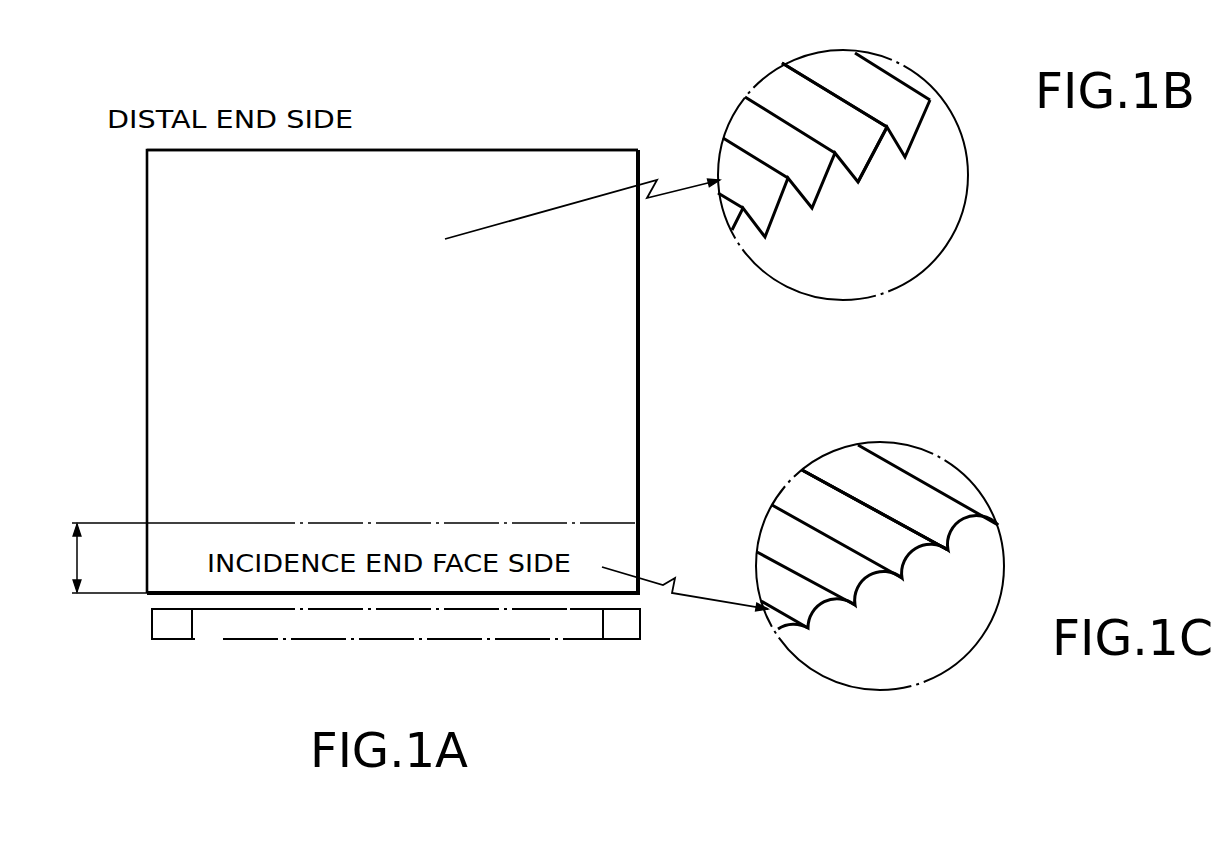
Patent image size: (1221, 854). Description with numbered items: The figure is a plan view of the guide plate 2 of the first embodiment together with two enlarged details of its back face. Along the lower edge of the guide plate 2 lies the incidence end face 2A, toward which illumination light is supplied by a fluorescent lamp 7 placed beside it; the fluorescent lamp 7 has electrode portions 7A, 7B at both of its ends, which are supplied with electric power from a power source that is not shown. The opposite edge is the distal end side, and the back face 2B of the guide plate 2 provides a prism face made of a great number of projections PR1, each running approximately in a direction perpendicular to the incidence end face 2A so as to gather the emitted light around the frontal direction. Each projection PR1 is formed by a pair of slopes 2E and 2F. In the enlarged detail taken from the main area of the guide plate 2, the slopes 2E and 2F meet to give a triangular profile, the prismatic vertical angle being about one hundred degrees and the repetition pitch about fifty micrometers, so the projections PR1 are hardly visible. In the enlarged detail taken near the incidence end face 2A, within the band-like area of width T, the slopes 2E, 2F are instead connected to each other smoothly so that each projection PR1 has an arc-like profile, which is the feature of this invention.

In FIG. 1A, the guide plate 2 is at (501, 158).
In FIG. 1A, the incidence end face 2A is at (161, 594).
In FIG. 1A, the back face 2B is at (411, 158).
In FIG. 1B, the slope 2E is at (773, 80).
In FIG. 1C, the slope 2E is at (798, 488).
In FIG. 1B, the slope 2F is at (889, 130).
In FIG. 1C, the slope 2F is at (884, 514).
In FIG. 1A, the fluorescent lamp 7 is at (463, 632).
In FIG. 1A, the electrode portion 7A is at (168, 636).
In FIG. 1A, the electrode portion 7B is at (622, 636).
In FIG. 1B, the projection PR1 is at (885, 155).
In FIG. 1C, the projection PR1 is at (975, 534).
In FIG. 1A, the width of band-like area T is at (62, 558).